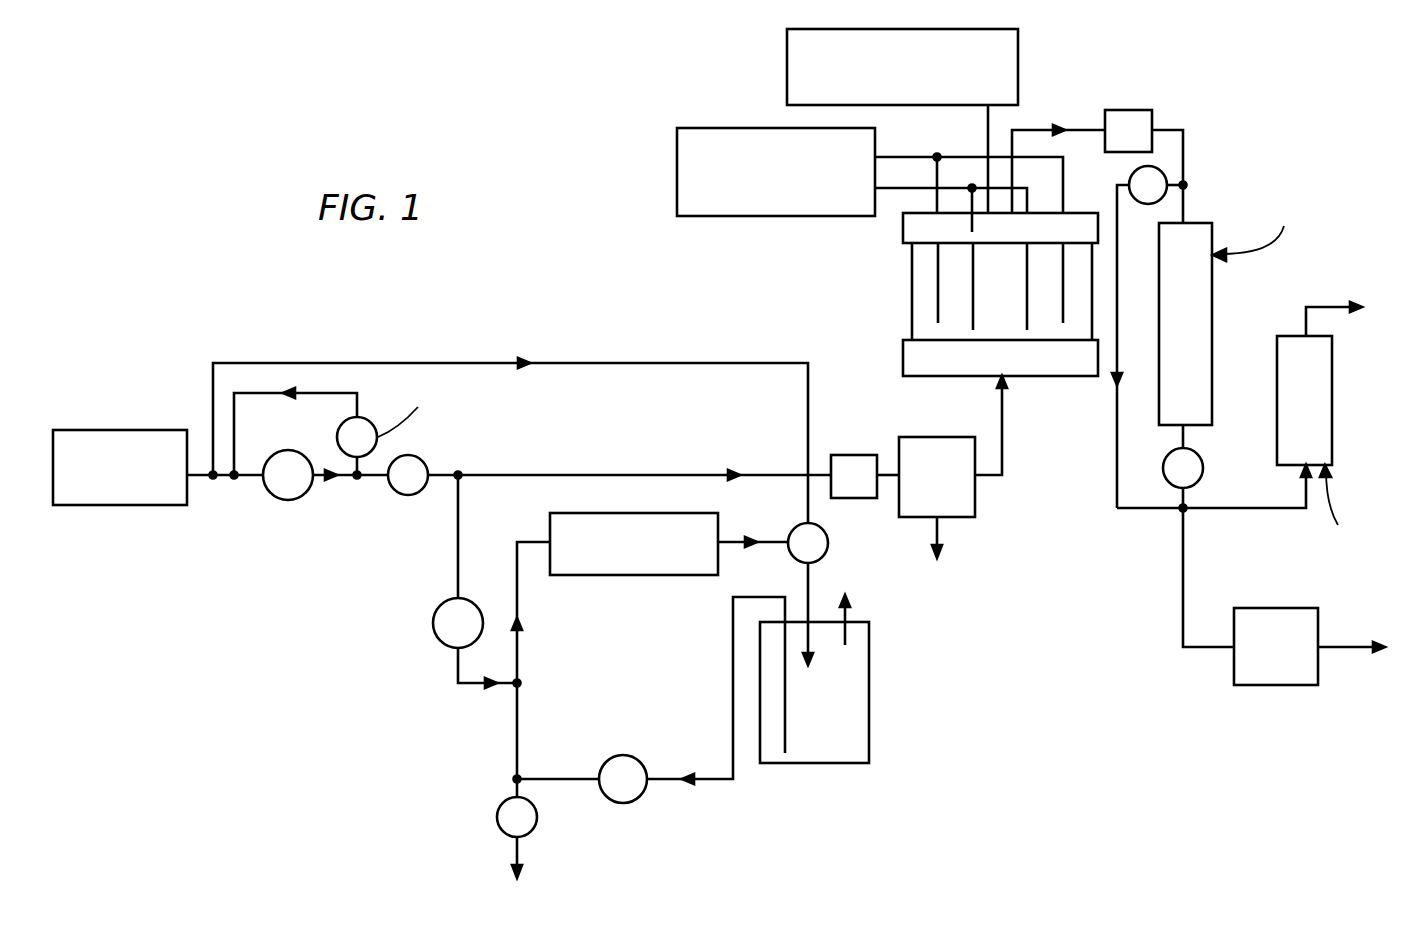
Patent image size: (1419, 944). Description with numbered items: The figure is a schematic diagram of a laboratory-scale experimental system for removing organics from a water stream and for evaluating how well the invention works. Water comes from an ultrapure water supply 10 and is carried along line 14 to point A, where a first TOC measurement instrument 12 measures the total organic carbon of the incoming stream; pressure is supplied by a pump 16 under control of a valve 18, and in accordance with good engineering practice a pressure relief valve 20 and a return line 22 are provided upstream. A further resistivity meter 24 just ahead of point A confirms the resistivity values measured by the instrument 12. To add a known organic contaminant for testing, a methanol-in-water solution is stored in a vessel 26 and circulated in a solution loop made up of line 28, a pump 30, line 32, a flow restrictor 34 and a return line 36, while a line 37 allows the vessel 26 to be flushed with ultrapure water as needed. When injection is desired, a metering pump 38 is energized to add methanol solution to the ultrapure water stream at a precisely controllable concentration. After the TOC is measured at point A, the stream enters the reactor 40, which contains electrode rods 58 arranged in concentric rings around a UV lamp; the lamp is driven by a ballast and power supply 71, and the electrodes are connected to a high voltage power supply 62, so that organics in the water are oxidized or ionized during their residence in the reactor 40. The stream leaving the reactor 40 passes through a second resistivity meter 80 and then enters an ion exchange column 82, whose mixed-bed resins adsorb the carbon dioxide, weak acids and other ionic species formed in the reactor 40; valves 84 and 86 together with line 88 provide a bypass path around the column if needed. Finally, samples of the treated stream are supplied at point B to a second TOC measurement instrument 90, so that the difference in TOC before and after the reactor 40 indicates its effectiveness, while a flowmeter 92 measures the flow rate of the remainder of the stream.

The ultrapure water supply 10 is at (140, 430).
The TOC measurement instrument 12 is at (925, 437).
The line 14 is at (597, 475).
The pump 16 is at (282, 500).
The valve 18 is at (408, 495).
The pressure relief valve 20 is at (365, 420).
The return line 22 is at (300, 395).
The resistivity meter 24 is at (855, 454).
The vessel 26 is at (869, 695).
The line 28 is at (733, 680).
The pump 30 is at (630, 758).
The line 32 is at (522, 728).
The flow restrictor 34 is at (616, 575).
The return line 36 is at (762, 533).
The line 37 is at (428, 363).
The metering pump 38 is at (444, 643).
The reactor 40 is at (1052, 376).
The electrode rods 58 is at (973, 280).
The high voltage power supply 62 is at (677, 185).
The ballast and power supply 71 is at (787, 72).
The second resistivity meter 80 is at (1137, 110).
The ion exchange column 82 is at (1212, 340).
The valve 84 is at (1124, 185).
The valve 86 is at (1200, 455).
The line 88 is at (1153, 512).
The TOC measurement instrument 90 is at (1290, 685).
The flowmeter 92 is at (1332, 415).